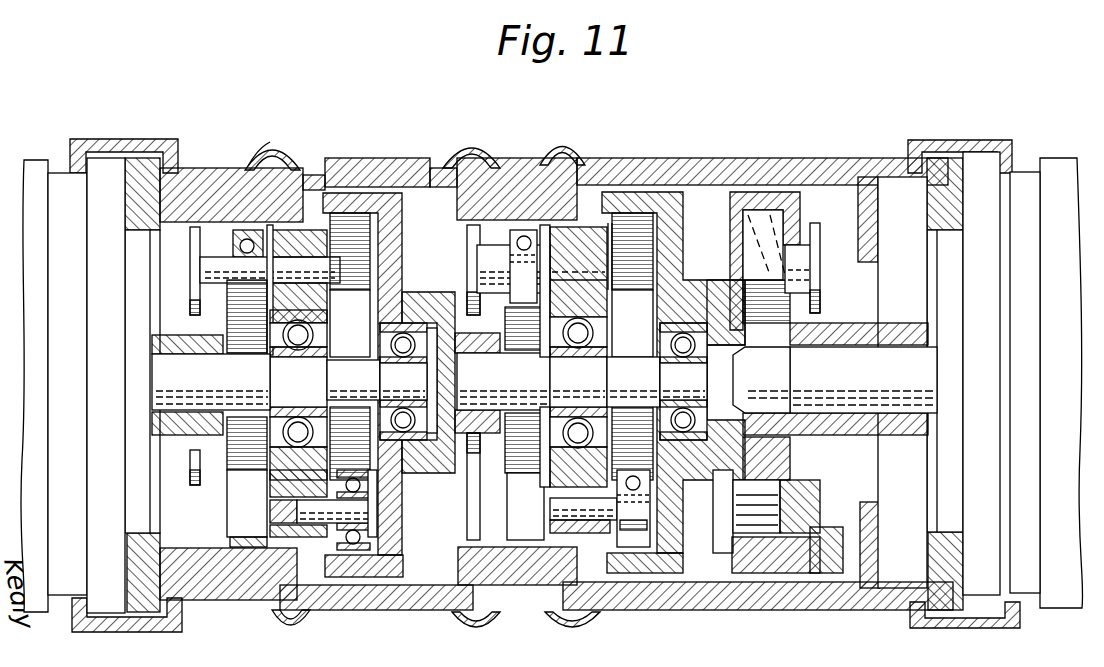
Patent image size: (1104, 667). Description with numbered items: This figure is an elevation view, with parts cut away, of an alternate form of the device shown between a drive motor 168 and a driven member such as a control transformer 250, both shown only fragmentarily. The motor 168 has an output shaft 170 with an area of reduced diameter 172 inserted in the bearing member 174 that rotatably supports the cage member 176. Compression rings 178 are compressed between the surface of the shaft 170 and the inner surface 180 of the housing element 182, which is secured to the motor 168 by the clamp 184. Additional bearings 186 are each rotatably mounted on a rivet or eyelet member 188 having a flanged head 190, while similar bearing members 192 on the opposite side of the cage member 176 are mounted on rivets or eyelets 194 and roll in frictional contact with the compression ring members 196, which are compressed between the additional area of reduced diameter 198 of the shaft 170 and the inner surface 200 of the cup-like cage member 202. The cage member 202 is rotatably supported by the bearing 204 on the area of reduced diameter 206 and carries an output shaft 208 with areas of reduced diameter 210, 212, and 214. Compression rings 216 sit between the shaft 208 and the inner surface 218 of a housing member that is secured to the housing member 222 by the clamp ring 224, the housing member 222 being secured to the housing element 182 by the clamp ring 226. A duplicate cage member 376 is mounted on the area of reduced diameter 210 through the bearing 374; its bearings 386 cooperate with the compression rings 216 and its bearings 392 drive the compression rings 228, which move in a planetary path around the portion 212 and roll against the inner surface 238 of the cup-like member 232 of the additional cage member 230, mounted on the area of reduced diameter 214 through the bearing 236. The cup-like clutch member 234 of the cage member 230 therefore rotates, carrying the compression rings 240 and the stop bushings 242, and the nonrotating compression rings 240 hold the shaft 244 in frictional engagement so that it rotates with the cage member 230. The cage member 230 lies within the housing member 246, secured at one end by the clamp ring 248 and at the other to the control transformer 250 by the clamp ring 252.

The motor 168 is at (29, 162).
The output shaft 170 is at (220, 387).
The area of reduced diameter 172 is at (310, 387).
The bearing member 174 is at (280, 478).
The cage member 176 is at (313, 548).
The compression rings 178 is at (262, 521).
The inner surface 180 is at (178, 227).
The housing element 182 is at (247, 230).
The clamp 184 is at (120, 140).
The additional bearings 186 is at (262, 155).
The rivet or eyelet member 188 is at (342, 270).
The flanged head 190 is at (200, 312).
The bearing members 192 is at (352, 548).
The rivets or eyelets 194 is at (380, 517).
The compression ring members 196 is at (367, 330).
The additional area of reduced diameter 198 is at (370, 391).
The inner surface 200 is at (372, 548).
The cup-like cage member 202 is at (360, 193).
The bearing 204 is at (410, 313).
The area of reduced diameter 206 is at (418, 391).
The output shaft 208 is at (522, 383).
The area of reduced diameter 210 is at (590, 387).
The area of reduced diameter 212 is at (650, 384).
The area of reduced diameter 214 is at (698, 387).
The compression rings 216 is at (539, 508).
The inner surface 218 is at (482, 548).
The housing member 222 is at (347, 160).
The clamp ring 224 is at (467, 150).
The clamp ring 226 is at (295, 150).
The compression rings 228 is at (647, 333).
The additional cage member 230 is at (705, 322).
The cup-like member 232 is at (652, 192).
The cup-like clutch member 234 is at (778, 192).
The bearing 236 is at (708, 403).
The inner surface 238 is at (600, 222).
The compression rings 240 is at (779, 243).
The stop bushings 242 is at (812, 245).
The shaft 244 is at (849, 376).
The housing member 246 is at (725, 158).
The clamp ring 248 is at (560, 146).
The control transformer 250 is at (1054, 158).
The clamp ring 252 is at (960, 138).
The bearing 374 is at (605, 283).
The cage member 376 is at (583, 614).
The bearings 386 is at (520, 232).
The bearings 392 is at (636, 548).